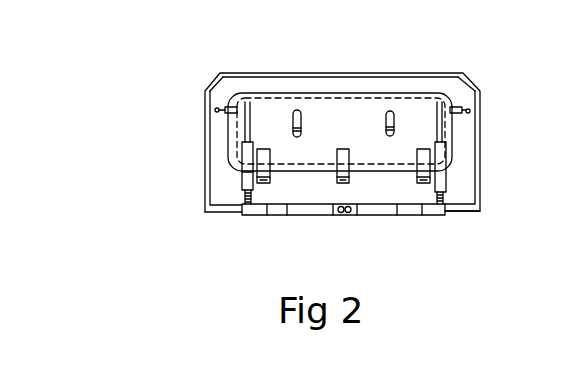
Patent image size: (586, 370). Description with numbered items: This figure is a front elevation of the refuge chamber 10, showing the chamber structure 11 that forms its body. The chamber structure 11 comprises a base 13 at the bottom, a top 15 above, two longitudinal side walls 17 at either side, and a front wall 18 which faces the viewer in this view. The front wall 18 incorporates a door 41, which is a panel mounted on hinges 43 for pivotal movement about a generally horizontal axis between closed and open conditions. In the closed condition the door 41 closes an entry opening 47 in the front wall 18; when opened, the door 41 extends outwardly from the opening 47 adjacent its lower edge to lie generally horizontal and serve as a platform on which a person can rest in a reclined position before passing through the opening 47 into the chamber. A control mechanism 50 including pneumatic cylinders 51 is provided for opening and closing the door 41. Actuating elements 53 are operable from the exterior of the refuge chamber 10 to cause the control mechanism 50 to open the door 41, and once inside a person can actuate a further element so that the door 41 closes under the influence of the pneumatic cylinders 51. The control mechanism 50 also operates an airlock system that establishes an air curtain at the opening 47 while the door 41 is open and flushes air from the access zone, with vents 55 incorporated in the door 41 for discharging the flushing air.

The refuge chamber 10 is at (141, 70).
The chamber structure 11 is at (263, 70).
The base 13 is at (431, 215).
The top 15 is at (315, 72).
The longitudinal side walls 17 is at (207, 152).
The front wall 18 is at (465, 190).
The door 41 is at (408, 106).
The hinges 43 is at (267, 178).
The entry opening 47 is at (305, 166).
The control mechanism 50 is at (243, 172).
The pneumatic cylinders 51 is at (244, 188).
The actuating elements 53 is at (215, 110).
The vents 55 is at (292, 110).